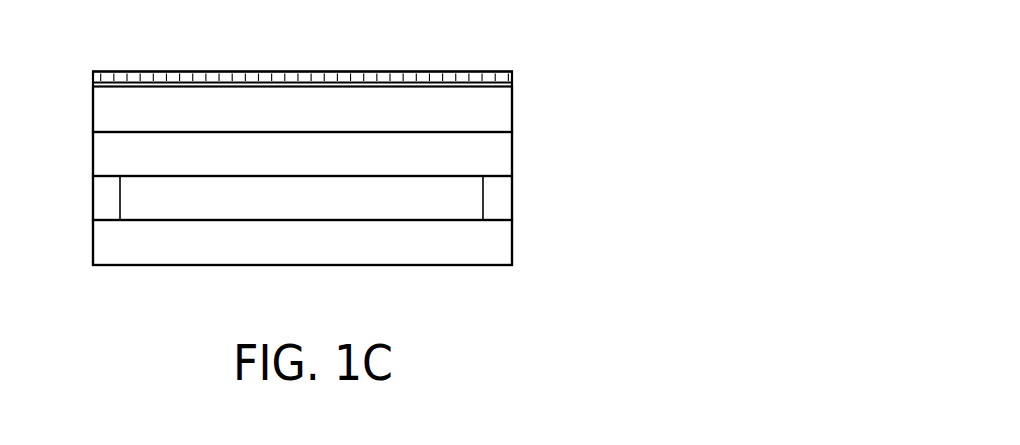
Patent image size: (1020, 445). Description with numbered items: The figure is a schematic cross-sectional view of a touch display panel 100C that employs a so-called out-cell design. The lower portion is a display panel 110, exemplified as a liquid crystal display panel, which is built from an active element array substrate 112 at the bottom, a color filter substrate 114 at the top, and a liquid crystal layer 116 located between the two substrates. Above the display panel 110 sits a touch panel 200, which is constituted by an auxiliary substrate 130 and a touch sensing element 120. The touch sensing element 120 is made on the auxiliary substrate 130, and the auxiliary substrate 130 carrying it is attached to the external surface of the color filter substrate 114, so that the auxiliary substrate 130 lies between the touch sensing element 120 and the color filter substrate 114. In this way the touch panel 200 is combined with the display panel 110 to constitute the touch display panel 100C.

The touch display panel 100C is at (577, 345).
The touch panel 200 is at (373, 81).
The touch sensing element 120 is at (490, 80).
The auxiliary substrate 130 is at (493, 112).
The display panel 110 is at (373, 197).
The color filter substrate 114 is at (492, 156).
The liquid crystal layer 116 is at (473, 212).
The active element array substrate 112 is at (342, 242).